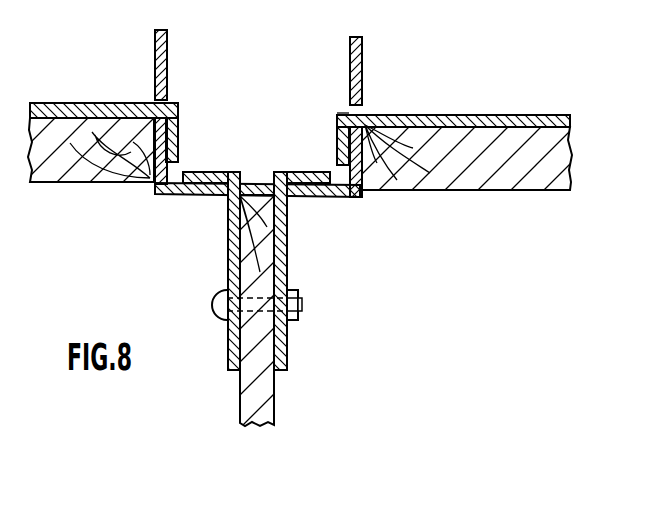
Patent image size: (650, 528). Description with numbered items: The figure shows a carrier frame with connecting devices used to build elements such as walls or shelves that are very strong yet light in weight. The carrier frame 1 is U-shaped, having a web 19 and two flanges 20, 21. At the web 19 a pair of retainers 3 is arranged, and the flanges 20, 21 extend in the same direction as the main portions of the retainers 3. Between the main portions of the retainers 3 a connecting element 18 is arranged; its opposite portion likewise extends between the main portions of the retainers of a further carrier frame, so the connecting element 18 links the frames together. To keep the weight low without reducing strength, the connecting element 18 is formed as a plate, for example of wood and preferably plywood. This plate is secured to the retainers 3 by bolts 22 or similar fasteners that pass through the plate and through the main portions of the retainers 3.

The carrier frame 1 is at (363, 54).
The retainer 3 is at (76, 95).
The connecting element 18 is at (265, 413).
The web 19 is at (330, 197).
The flange 20 is at (155, 73).
The flange 21 is at (363, 95).
The bolt 22 is at (302, 303).